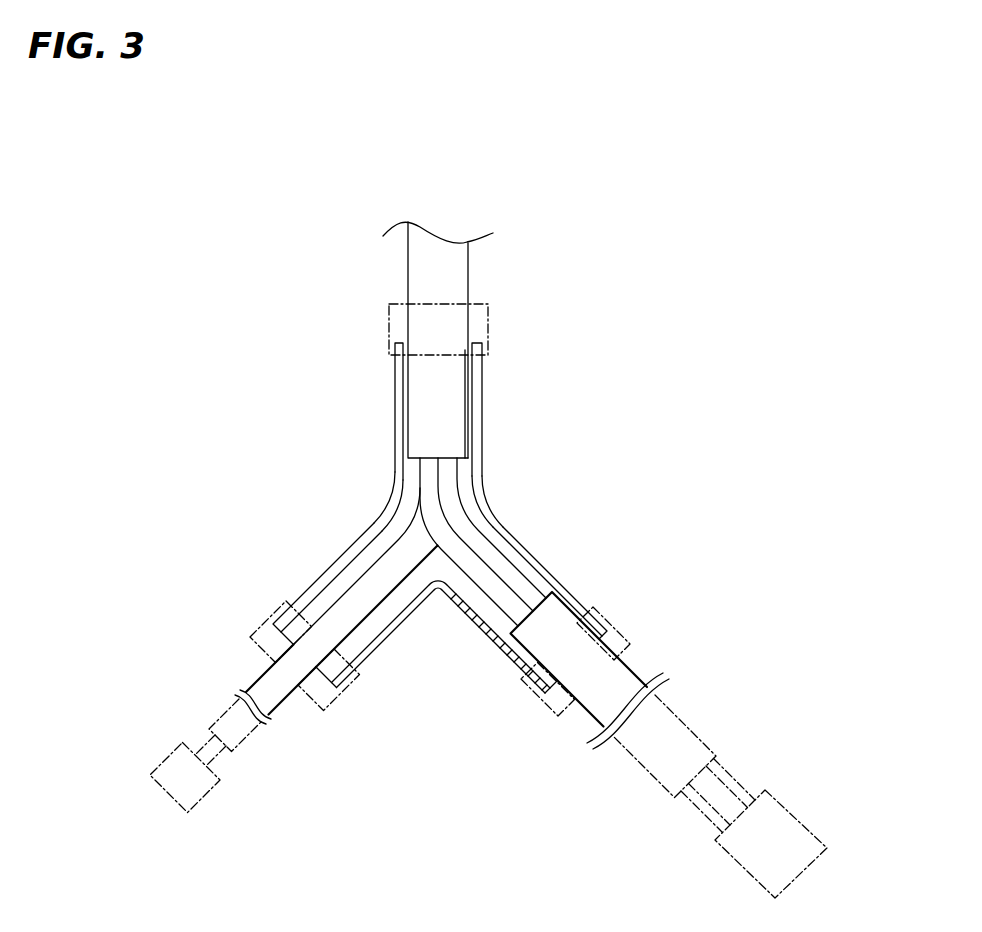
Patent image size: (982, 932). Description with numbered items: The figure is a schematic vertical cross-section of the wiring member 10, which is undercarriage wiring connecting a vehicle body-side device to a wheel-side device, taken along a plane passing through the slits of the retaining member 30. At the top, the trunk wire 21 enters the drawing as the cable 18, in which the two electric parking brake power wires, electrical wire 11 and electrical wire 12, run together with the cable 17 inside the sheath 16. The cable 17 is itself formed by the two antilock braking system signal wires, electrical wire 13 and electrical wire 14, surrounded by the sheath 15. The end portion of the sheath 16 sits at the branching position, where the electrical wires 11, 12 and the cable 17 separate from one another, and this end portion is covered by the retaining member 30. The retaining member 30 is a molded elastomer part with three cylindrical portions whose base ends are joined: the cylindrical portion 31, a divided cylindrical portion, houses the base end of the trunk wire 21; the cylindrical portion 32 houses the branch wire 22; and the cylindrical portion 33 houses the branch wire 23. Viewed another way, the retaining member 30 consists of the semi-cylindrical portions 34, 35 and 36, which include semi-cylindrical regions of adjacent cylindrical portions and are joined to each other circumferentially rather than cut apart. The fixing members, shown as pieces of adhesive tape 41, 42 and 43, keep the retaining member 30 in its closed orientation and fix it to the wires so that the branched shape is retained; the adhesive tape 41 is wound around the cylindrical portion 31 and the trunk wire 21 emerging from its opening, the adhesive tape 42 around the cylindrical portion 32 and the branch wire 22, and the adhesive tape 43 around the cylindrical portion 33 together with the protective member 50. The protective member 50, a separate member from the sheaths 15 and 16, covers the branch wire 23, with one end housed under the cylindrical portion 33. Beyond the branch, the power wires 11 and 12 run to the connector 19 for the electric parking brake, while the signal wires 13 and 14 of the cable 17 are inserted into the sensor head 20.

The wiring member 10 is at (382, 152).
The electrical wire 11 is at (481, 548).
The electrical wire 12 is at (497, 584).
The electrical wire 13 is at (185, 738).
The electrical wire 14 is at (206, 770).
The sheath 15 is at (252, 680).
The sheath 16 is at (456, 389).
The cable 17 is at (262, 727).
The cable 18 is at (412, 276).
The connector 19 is at (793, 818).
The sensor head 20 is at (180, 800).
The trunk wire 21 is at (479, 272).
The branch wire 22 is at (359, 567).
The branch wire 23 is at (486, 611).
The retaining member 30 is at (384, 427).
The cylindrical portion 31 is at (394, 381).
The cylindrical portion 32 is at (300, 596).
The cylindrical portion 33 is at (507, 651).
The semi-cylindrical portion 34 is at (438, 586).
The semi-cylindrical portion 35 is at (381, 506).
The semi-cylindrical portion 36 is at (483, 490).
The adhesive tape 41 is at (490, 328).
The adhesive tape 42 is at (324, 712).
The adhesive tape 43 is at (548, 692).
The protective member 50 is at (688, 717).